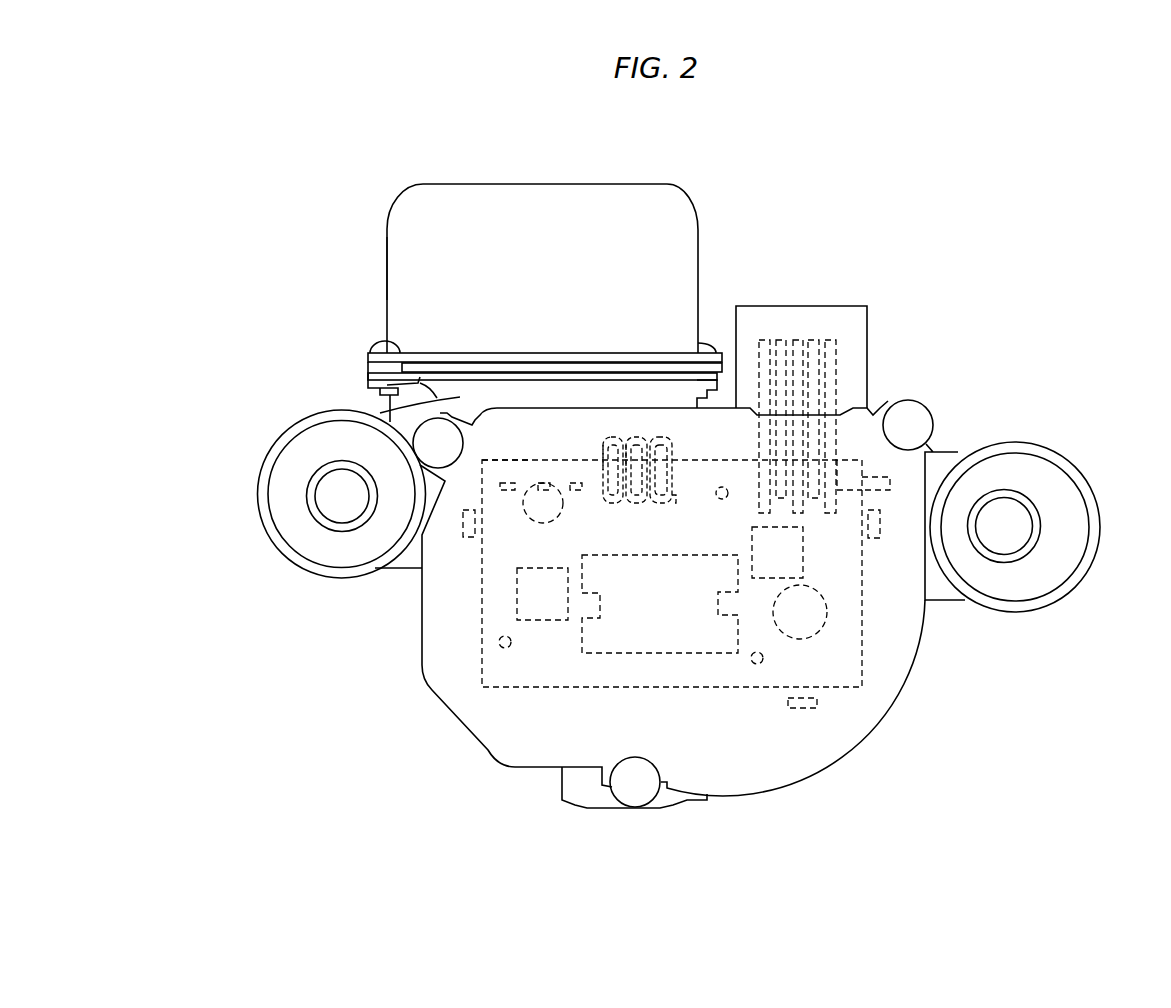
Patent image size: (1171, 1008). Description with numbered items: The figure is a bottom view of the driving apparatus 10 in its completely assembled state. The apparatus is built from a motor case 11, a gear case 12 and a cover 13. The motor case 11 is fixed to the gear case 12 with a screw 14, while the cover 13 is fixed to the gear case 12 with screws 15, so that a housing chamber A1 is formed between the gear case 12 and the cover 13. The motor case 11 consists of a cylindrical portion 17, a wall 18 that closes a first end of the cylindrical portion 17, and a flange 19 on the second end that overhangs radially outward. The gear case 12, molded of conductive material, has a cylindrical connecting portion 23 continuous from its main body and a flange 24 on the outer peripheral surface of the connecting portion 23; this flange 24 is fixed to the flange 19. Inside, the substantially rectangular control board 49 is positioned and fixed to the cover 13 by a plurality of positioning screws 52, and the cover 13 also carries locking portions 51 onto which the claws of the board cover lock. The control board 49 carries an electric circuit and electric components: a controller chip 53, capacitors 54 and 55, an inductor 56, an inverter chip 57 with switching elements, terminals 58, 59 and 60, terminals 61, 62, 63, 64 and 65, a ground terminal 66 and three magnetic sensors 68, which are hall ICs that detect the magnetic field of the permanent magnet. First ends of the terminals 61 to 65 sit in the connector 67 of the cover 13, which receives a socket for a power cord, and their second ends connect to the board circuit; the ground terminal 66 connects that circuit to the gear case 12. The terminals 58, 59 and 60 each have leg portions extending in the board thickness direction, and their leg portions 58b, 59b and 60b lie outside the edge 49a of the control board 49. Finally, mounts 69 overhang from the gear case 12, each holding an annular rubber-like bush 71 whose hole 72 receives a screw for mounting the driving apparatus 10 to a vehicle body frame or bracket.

The driving apparatus 10 is at (802, 218).
The motor case 11 is at (372, 173).
The gear case 12 is at (405, 578).
The cover 13 is at (835, 770).
The screw 14 is at (383, 343).
The screws 15 is at (447, 442).
The cylindrical portion 17 is at (387, 237).
The wall 18 is at (433, 183).
The flange 19 is at (552, 358).
The connecting portion 23 is at (385, 407).
The flange 24 is at (523, 373).
The control board 49 is at (708, 697).
The edge 49a is at (528, 460).
The locking portions 51 is at (462, 532).
The positioning screws 52 is at (737, 455).
The controller chip 53 is at (543, 607).
The capacitor 54 is at (537, 513).
The capacitor 55 is at (815, 622).
The inductor 56 is at (793, 558).
The inverter chip 57 is at (677, 637).
The terminal 58 is at (595, 427).
The leg portion 58b is at (600, 442).
The terminal 59 is at (635, 427).
The leg portion 59b is at (618, 440).
The terminal 60 is at (663, 423).
The leg portion 60b is at (722, 487).
The terminal 61 is at (772, 337).
The terminal 62 is at (792, 335).
The terminal 63 is at (812, 335).
The terminal 64 is at (822, 353).
The terminal 65 is at (843, 377).
The ground terminal 66 is at (895, 468).
The connector 67 is at (767, 315).
The magnetic sensors 68 is at (540, 483).
The mounts 69 is at (288, 440).
The bush 71 is at (300, 487).
The hole 72 is at (330, 497).
The housing chamber A1 is at (510, 700).